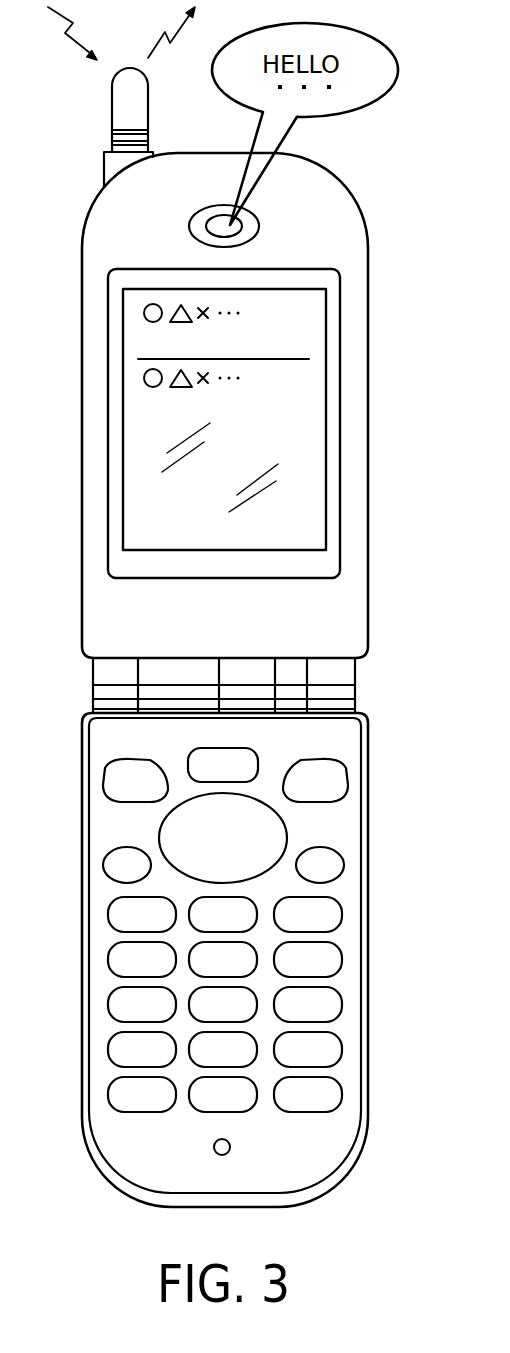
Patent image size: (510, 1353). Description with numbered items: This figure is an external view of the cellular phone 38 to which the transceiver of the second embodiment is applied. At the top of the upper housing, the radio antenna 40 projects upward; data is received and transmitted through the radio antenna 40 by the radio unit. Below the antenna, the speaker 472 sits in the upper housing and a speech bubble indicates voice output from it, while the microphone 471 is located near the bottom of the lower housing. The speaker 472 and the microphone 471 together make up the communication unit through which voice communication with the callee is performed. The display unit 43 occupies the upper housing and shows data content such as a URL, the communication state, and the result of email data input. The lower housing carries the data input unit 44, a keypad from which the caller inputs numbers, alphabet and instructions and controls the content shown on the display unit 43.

The cellular phone 38 is at (370, 272).
The radio antenna 40 is at (112, 115).
The display unit 43 is at (293, 423).
The data input unit 44 is at (322, 832).
The microphone 471 is at (214, 1148).
The speaker 472 is at (252, 222).